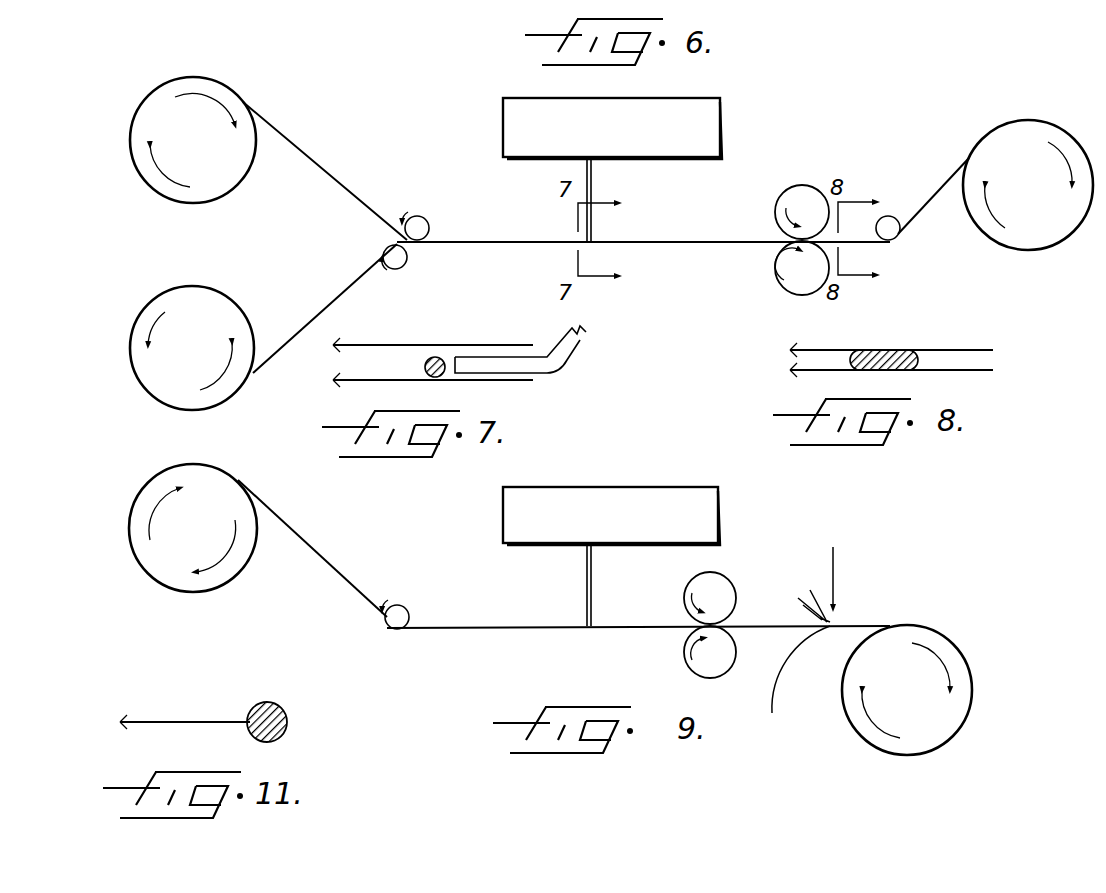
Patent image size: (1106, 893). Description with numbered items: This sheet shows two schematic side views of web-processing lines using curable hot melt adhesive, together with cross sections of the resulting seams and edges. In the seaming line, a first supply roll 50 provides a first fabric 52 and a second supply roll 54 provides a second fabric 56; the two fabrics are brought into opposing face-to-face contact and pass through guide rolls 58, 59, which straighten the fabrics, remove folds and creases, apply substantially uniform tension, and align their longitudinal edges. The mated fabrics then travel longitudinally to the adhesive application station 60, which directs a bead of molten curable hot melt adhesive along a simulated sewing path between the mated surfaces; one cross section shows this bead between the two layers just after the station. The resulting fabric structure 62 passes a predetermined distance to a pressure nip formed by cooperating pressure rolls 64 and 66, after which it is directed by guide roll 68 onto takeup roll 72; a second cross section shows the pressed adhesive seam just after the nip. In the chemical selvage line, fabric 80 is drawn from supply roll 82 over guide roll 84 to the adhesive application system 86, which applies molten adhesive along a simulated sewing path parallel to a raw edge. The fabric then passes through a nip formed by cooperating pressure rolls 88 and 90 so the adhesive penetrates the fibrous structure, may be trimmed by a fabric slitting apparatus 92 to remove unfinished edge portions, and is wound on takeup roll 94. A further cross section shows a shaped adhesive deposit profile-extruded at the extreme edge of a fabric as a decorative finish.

In FIG. 6, the first supply roll 50 is at (214, 80).
In FIG. 6, the first fabric 52 is at (290, 133).
In FIG. 6, the second supply roll 54 is at (230, 392).
In FIG. 6, the second fabric 56 is at (322, 308).
In FIG. 6, the guide roll 58 is at (430, 220).
In FIG. 6, the guide roll 59 is at (407, 263).
In FIG. 6, the adhesive application station 60 is at (503, 115).
In FIG. 6, the fabric structure 62 is at (692, 240).
In FIG. 6, the pressure roll 64 is at (792, 188).
In FIG. 6, the pressure roll 66 is at (782, 288).
In FIG. 6, the guide roll 68 is at (892, 220).
In FIG. 6, the takeup roll 72 is at (1030, 120).
In FIG. 9, the fabric 80 is at (302, 540).
In FIG. 9, the supply roll 82 is at (228, 495).
In FIG. 9, the guide roll 84 is at (402, 603).
In FIG. 9, the adhesive application system 86 is at (618, 487).
In FIG. 9, the pressure roll 88 is at (690, 582).
In FIG. 9, the pressure roll 90 is at (688, 668).
In FIG. 9, the fabric slitting apparatus 92 is at (830, 622).
In FIG. 9, the takeup roll 94 is at (952, 640).